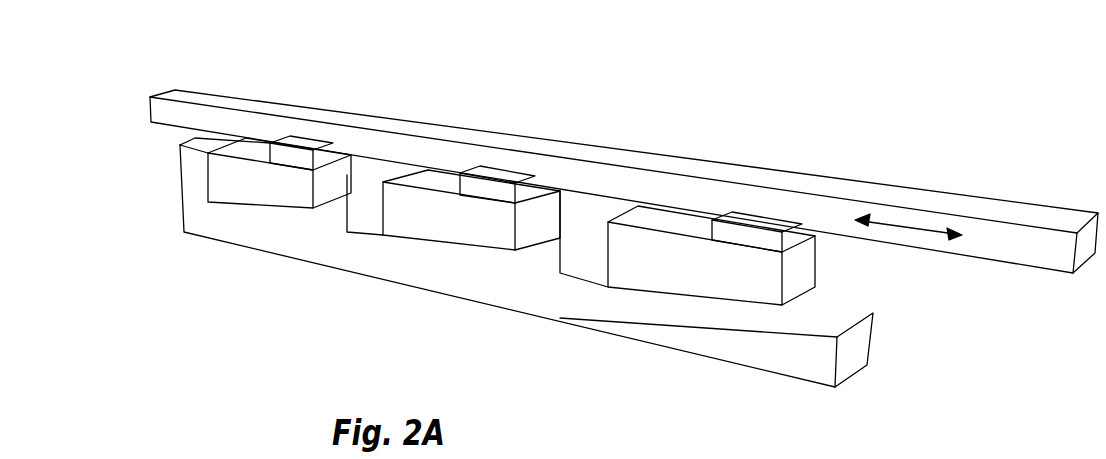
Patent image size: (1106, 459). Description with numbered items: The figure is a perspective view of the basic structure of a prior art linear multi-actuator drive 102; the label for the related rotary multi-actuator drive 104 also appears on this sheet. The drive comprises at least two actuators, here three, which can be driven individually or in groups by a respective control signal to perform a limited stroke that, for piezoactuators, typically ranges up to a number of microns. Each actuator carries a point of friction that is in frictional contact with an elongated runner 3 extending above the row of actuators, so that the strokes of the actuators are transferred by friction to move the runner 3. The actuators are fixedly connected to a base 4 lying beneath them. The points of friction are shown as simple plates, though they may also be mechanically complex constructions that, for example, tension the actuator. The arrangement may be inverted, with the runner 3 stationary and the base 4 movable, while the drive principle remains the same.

The runner 3 is at (985, 203).
The base 4 is at (200, 165).
The linear multi-actuator drive 102 is at (666, 101).
The rotary multi-actuator drive 104 is at (962, 449).